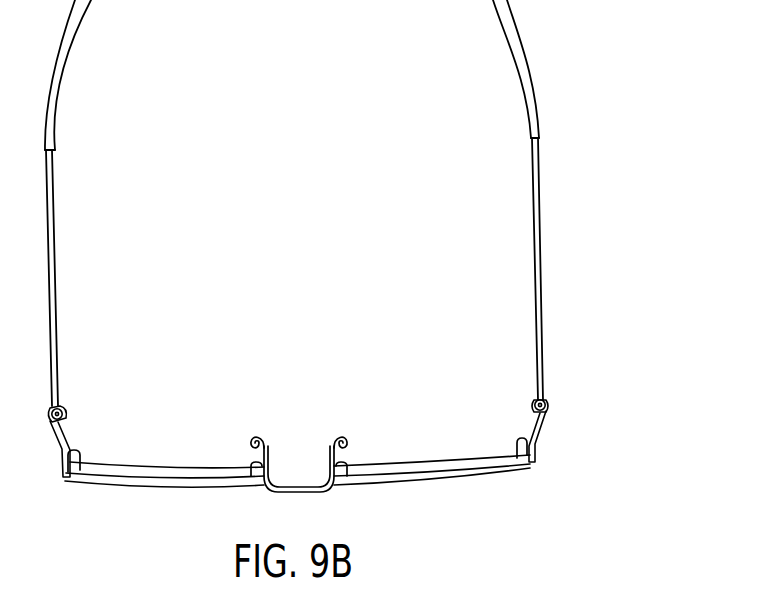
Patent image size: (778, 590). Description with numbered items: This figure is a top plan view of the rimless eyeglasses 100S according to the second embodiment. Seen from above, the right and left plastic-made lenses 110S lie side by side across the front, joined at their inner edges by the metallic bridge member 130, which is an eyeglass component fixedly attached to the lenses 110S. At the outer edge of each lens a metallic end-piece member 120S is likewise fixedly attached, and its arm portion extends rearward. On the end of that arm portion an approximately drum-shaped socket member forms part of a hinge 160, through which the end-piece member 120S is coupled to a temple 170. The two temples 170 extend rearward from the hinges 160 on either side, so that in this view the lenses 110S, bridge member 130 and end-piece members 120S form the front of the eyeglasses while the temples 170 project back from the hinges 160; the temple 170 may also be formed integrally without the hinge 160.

The rimless eyeglasses 100S is at (358, 251).
The temple 170 is at (533, 184).
The hinge 160 is at (68, 399).
The plastic-made lens 110S is at (167, 470).
The metallic bridge member 130 is at (288, 480).
The metallic end-piece member 120S is at (547, 461).